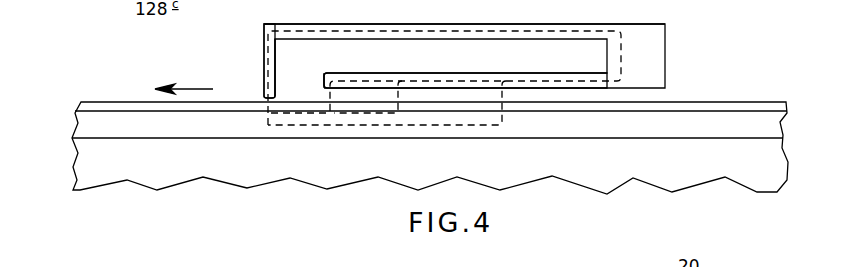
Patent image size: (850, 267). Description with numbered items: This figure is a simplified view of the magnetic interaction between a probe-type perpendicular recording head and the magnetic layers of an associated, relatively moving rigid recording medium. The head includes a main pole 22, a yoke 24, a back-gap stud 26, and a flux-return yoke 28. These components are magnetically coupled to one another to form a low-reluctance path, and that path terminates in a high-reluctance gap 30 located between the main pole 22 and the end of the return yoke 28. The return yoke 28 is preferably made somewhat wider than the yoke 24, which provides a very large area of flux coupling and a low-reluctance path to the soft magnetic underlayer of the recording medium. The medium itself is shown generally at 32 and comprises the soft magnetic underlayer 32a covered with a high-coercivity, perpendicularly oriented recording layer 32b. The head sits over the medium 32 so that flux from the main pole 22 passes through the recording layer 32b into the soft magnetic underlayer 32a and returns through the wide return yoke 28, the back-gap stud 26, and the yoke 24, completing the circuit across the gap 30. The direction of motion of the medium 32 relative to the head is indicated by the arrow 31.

The main pole 22 is at (264, 86).
The yoke 24 is at (424, 23).
The back-gap stud 26 is at (466, 62).
The flux-return yoke 28 is at (547, 73).
The high-reluctance gap 30 is at (303, 75).
The arrow 31 is at (198, 88).
The recording medium 32 is at (459, 129).
The soft magnetic underlayer 32a is at (722, 137).
The recording layer 32b is at (722, 101).